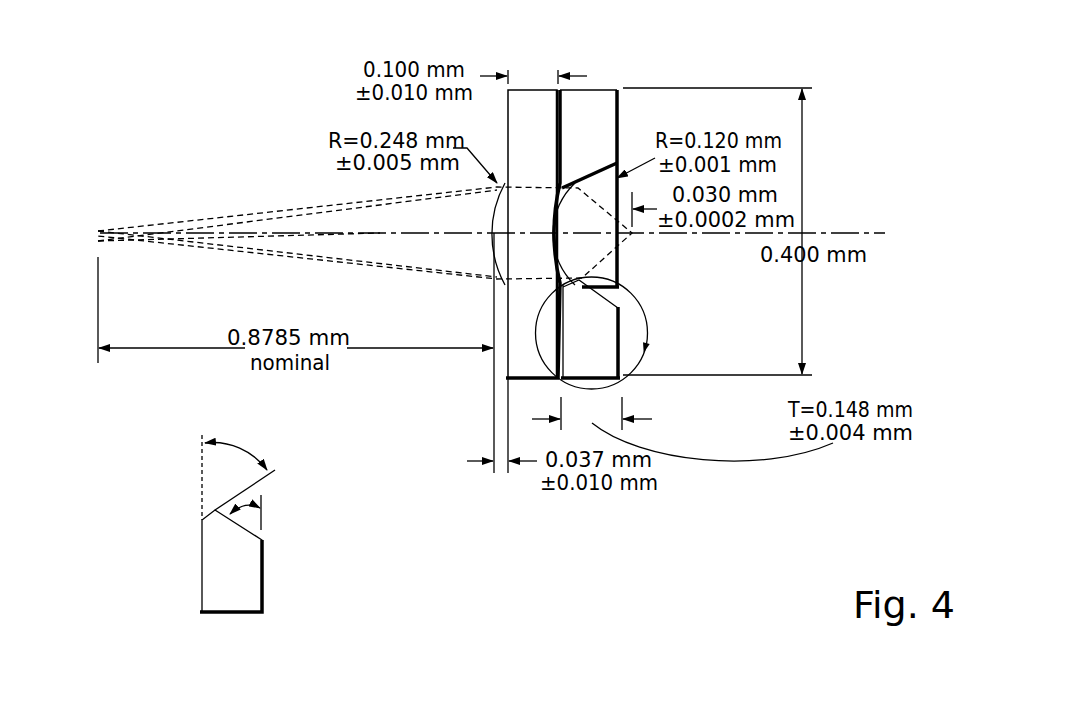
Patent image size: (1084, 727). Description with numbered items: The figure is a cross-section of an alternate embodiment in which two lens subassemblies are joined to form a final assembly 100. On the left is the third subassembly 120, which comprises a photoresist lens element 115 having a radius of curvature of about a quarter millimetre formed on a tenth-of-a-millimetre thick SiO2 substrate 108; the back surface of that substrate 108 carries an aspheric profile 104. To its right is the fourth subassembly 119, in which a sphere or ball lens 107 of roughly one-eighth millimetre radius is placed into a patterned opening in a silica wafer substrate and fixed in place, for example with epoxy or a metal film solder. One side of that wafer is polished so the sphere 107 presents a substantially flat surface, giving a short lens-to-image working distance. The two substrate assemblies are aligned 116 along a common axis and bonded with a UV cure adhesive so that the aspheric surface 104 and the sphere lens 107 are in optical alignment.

The final assembly 100 is at (268, 108).
The aspheric profile 104 is at (537, 292).
The sphere or ball lens 107 is at (627, 271).
The SiO2 substrate 108 is at (527, 77).
The lens element 115 is at (463, 213).
The alignment 116 is at (887, 232).
The fourth subassembly 119 is at (672, 503).
The third subassembly 120 is at (505, 525).